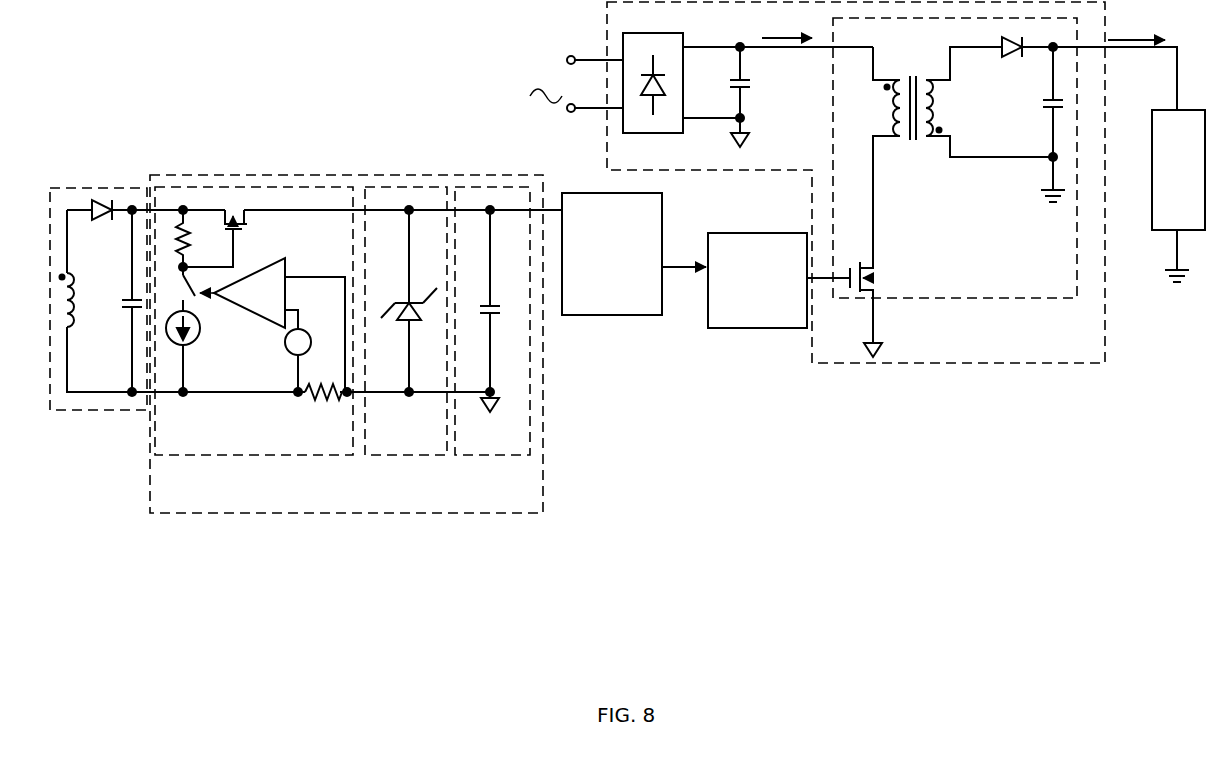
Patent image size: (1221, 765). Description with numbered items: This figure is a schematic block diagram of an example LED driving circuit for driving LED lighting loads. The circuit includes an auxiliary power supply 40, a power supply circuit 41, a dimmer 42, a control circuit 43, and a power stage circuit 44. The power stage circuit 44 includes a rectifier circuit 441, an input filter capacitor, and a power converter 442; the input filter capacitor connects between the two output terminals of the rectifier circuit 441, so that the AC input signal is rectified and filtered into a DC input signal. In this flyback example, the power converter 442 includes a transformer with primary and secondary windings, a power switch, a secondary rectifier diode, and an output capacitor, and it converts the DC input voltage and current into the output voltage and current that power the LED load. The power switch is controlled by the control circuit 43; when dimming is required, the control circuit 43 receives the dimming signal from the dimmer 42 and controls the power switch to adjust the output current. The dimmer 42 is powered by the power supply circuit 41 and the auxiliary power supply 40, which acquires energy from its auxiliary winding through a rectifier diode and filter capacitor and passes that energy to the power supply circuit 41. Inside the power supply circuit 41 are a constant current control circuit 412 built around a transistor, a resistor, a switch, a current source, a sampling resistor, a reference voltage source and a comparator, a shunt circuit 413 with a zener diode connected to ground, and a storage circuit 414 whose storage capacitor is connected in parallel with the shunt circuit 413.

The auxiliary power supply 40 is at (83, 412).
The power supply circuit 41 is at (270, 514).
The constant current control circuit 412 is at (257, 456).
The shunt circuit 413 is at (395, 456).
The storage circuit 414 is at (470, 456).
The dimmer 42 is at (625, 301).
The control circuit 43 is at (722, 330).
The power stage circuit 44 is at (925, 365).
The rectifier circuit 441 is at (650, 134).
The power converter 442 is at (952, 300).